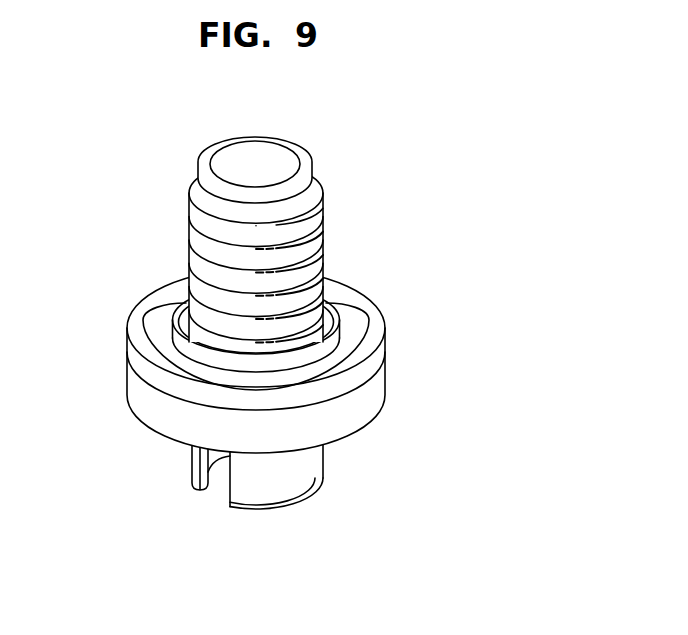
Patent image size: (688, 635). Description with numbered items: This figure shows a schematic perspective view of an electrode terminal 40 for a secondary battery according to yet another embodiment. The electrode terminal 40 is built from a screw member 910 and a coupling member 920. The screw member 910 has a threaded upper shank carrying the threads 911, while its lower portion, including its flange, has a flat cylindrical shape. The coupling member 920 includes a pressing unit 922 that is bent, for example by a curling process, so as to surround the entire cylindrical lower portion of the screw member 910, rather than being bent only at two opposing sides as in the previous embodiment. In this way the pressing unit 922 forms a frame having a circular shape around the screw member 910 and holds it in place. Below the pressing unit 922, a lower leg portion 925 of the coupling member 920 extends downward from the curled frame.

The electrode terminal 40 is at (128, 179).
The screw member 910 is at (335, 209).
The thread portion 911 is at (323, 265).
The coupling member 920 is at (396, 399).
The pressing unit 922 is at (383, 373).
The insertion leg portion 925 is at (283, 488).